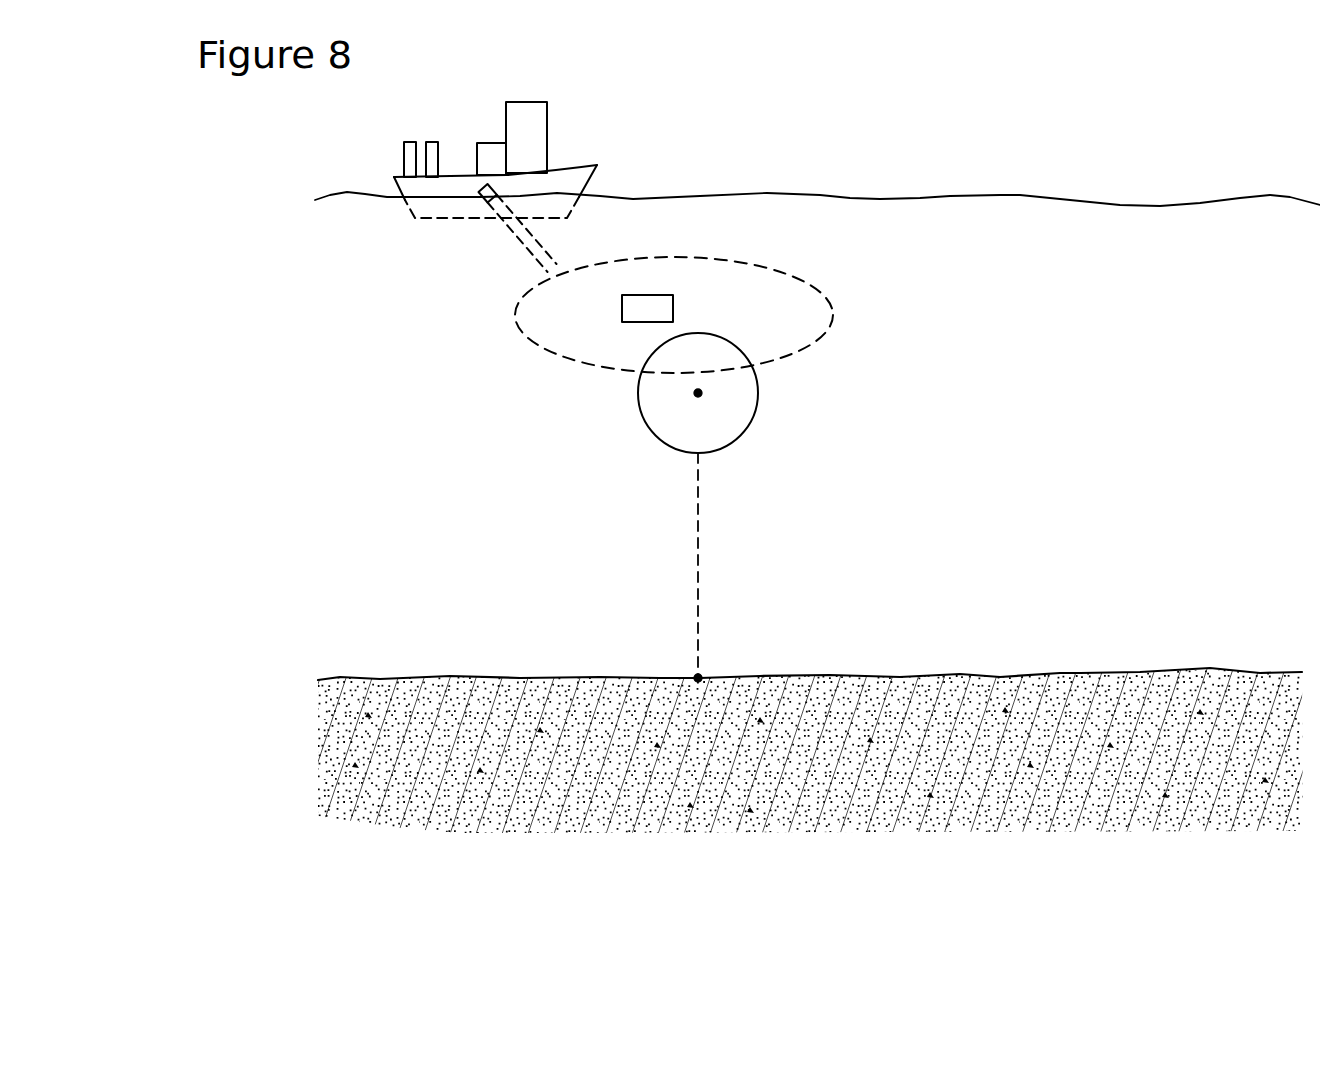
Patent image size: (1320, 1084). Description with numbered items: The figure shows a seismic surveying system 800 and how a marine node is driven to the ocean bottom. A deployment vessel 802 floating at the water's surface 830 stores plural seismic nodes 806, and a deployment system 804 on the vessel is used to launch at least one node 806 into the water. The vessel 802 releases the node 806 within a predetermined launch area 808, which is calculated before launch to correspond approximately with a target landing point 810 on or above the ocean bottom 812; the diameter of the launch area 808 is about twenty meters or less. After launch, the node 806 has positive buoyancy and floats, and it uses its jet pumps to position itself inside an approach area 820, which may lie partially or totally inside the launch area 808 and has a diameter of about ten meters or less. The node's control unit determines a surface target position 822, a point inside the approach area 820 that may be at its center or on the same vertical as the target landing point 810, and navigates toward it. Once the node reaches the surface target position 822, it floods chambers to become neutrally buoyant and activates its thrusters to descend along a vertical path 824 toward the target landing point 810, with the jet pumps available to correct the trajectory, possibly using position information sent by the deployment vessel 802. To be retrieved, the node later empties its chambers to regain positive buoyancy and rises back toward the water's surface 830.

The seismic surveying system 800 is at (873, 67).
The deployment vessel 802 is at (580, 165).
The deployment system 804 is at (520, 243).
The seismic node 806 is at (408, 140).
The launch area 808 is at (793, 275).
The target landing point 810 is at (700, 675).
The ocean bottom 812 is at (1075, 675).
The approach area 820 is at (758, 400).
The surface target position 822 is at (698, 393).
The vertical path 824 is at (698, 543).
The water surface 830 is at (1020, 195).